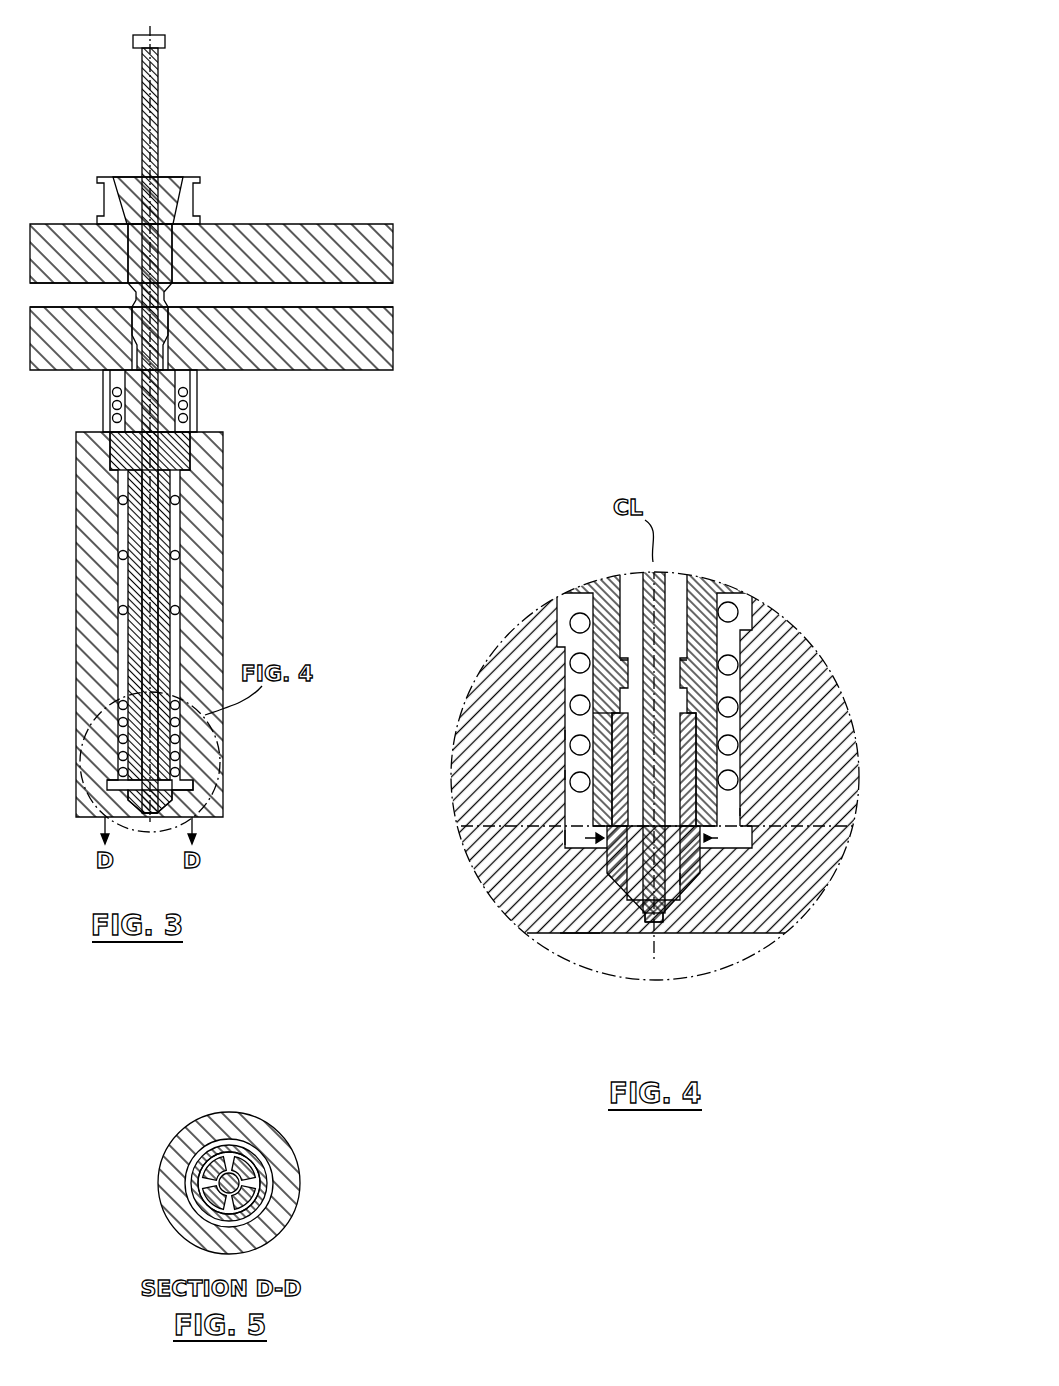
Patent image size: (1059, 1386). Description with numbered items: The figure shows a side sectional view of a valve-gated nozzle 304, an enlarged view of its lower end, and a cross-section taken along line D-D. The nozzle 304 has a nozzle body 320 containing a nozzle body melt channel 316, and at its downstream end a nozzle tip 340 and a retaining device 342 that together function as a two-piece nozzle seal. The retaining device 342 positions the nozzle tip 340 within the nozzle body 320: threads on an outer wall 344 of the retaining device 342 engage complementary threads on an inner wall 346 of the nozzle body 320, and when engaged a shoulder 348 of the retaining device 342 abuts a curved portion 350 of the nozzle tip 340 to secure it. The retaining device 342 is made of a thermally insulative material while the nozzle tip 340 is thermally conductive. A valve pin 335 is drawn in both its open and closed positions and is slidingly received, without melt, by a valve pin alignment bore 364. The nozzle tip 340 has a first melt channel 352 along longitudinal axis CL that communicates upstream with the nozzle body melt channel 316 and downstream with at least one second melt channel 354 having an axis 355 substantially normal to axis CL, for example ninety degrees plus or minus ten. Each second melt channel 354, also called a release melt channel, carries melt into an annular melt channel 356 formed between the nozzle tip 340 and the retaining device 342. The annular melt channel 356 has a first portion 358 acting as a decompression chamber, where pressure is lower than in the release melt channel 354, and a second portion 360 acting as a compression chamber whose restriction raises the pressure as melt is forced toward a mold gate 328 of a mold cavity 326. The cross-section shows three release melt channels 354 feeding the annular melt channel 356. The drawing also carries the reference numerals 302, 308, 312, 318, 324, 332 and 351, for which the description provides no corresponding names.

In FIG. 3, the mold plate 302 is at (330, 224).
In FIG. 3, the valve-gated nozzle 304 is at (185, 488).
In FIG. 4, the valve-gated nozzle 304 is at (598, 575).
In FIG. 3, the melt channel 308 is at (393, 297).
In FIG. 3, the nozzle head section 312 is at (197, 372).
In FIG. 3, the nozzle body melt channel 316 is at (161, 530).
In FIG. 4, the nozzle body melt channel 316 is at (682, 575).
In FIG. 3, the collar 318 is at (185, 436).
In FIG. 3, the nozzle body 320 is at (170, 575).
In FIG. 4, the nozzle body 320 is at (702, 575).
In FIG. 5, the nozzle body 320 is at (275, 1148).
In FIG. 3, the nozzle tip outlet 324 is at (150, 820).
In FIG. 4, the mold cavity 326 is at (580, 950).
In FIG. 4, the mold gate 328 is at (660, 922).
In FIG. 3, the coil spring / heater 332 is at (176, 505).
In FIG. 4, the coil spring / heater 332 is at (748, 700).
In FIG. 3, the valve pin 335 is at (158, 96).
In FIG. 4, the valve pin 335 is at (658, 573).
In FIG. 5, the valve pin 335 is at (226, 1185).
In FIG. 3, the nozzle tip 340 is at (190, 782).
In FIG. 4, the nozzle tip 340 is at (618, 668).
In FIG. 4, the retaining device 342 is at (607, 862).
In FIG. 4, the outer wall 344 is at (582, 732).
In FIG. 4, the inner wall 346 is at (582, 772).
In FIG. 4, the shoulder 348 is at (612, 745).
In FIG. 4, the curved portion 350 is at (596, 712).
In FIG. 4, the tip taper surface 351 is at (603, 900).
In FIG. 4, the first melt channel 352 is at (728, 750).
In FIG. 5, the first melt channel 352 is at (262, 1190).
In FIG. 4, the second melt channel 354 is at (740, 812).
In FIG. 5, the second melt channel 354 is at (232, 1158).
In FIG. 4, the axis 355 is at (430, 827).
In FIG. 4, the annular melt channel 356 is at (685, 878).
In FIG. 5, the annular melt channel 356 is at (229, 1183).
In FIG. 4, the first portion 358 is at (694, 846).
In FIG. 4, the second portion 360 is at (672, 922).
In FIG. 4, the valve pin alignment bore 364 is at (650, 922).